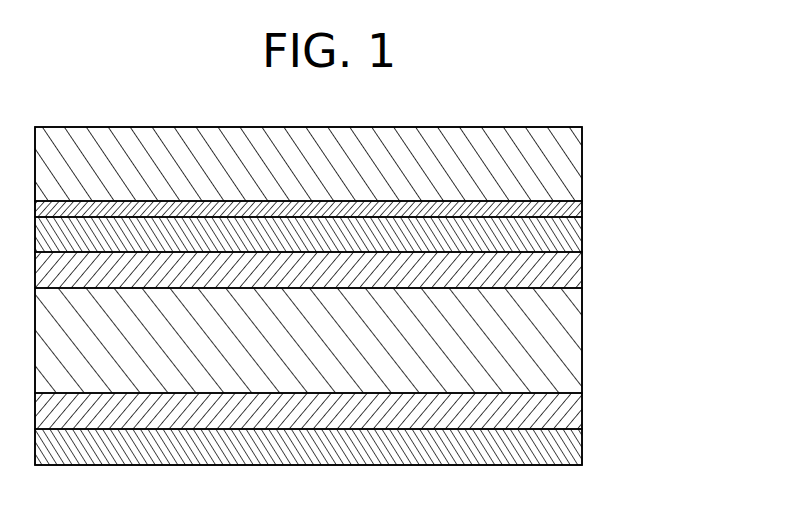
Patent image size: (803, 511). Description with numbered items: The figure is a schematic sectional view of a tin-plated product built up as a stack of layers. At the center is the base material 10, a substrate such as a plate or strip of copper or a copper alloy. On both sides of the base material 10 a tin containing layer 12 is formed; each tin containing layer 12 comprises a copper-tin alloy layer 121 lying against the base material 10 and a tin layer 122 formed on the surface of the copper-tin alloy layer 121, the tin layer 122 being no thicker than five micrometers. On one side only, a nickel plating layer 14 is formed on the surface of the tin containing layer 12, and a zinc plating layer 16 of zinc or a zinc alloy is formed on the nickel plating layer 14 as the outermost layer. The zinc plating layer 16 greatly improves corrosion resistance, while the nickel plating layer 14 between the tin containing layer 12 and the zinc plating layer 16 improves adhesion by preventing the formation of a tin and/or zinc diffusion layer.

The base material 10 is at (582, 333).
The tin containing layer 12 is at (385, 341).
The copper-tin alloy layer 121 is at (582, 280).
The tin layer 122 is at (582, 235).
The nickel plating layer 14 is at (582, 208).
The zinc plating layer 16 is at (582, 146).